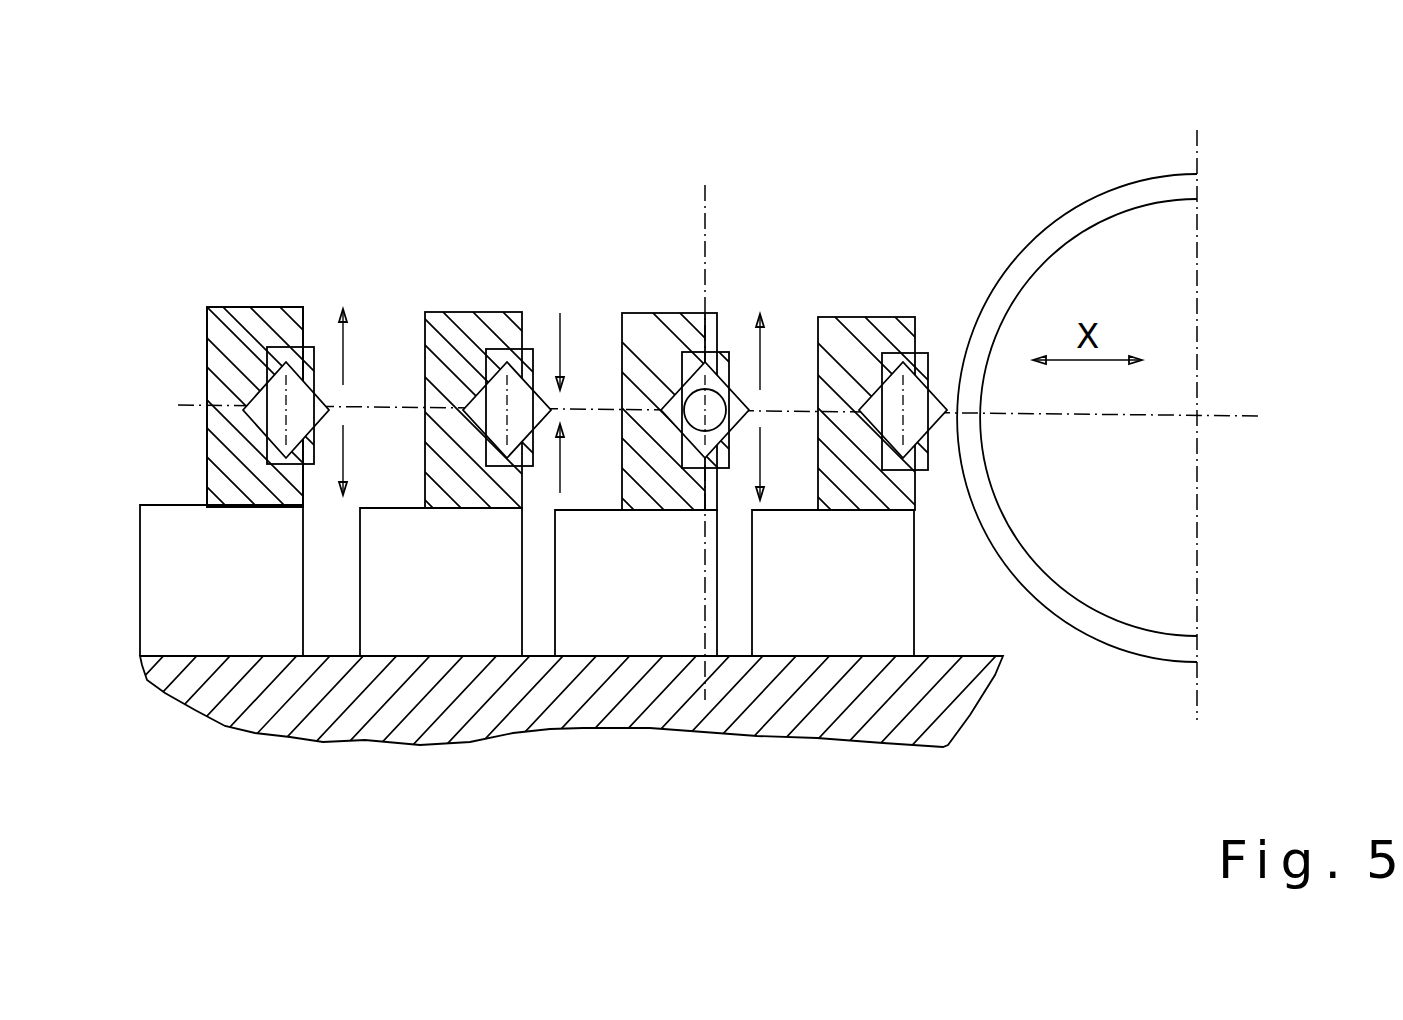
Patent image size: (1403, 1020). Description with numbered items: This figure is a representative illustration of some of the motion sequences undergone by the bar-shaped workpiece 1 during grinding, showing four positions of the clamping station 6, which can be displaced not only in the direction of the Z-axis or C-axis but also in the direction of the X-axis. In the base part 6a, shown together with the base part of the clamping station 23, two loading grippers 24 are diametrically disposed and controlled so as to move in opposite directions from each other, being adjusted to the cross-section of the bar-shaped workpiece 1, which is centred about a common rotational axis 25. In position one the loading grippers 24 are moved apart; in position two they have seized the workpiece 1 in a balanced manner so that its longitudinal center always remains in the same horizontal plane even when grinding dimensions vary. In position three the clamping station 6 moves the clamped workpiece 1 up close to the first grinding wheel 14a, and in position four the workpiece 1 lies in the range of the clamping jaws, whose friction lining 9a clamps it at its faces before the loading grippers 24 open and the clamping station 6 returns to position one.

The bar-shaped workpiece 1 is at (523, 390).
The clamping station 6 is at (178, 483).
The base part 6a is at (247, 308).
The friction lining 9a is at (718, 378).
The first grinding wheel 14a is at (1088, 213).
The base part of the clamping station 23 is at (208, 342).
The loading gripper 24 is at (314, 346).
The common rotational axis 25 is at (275, 371).